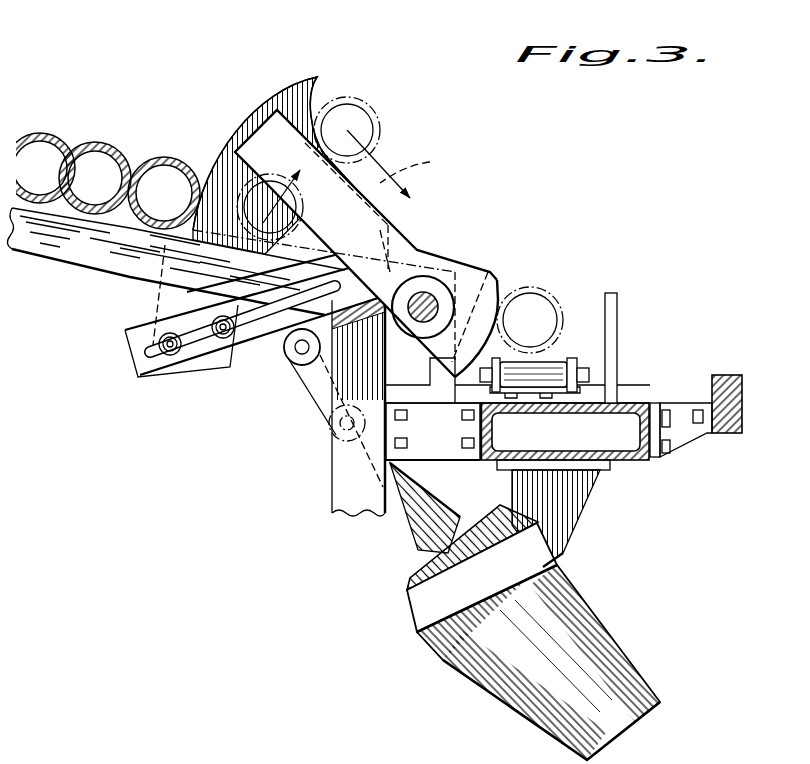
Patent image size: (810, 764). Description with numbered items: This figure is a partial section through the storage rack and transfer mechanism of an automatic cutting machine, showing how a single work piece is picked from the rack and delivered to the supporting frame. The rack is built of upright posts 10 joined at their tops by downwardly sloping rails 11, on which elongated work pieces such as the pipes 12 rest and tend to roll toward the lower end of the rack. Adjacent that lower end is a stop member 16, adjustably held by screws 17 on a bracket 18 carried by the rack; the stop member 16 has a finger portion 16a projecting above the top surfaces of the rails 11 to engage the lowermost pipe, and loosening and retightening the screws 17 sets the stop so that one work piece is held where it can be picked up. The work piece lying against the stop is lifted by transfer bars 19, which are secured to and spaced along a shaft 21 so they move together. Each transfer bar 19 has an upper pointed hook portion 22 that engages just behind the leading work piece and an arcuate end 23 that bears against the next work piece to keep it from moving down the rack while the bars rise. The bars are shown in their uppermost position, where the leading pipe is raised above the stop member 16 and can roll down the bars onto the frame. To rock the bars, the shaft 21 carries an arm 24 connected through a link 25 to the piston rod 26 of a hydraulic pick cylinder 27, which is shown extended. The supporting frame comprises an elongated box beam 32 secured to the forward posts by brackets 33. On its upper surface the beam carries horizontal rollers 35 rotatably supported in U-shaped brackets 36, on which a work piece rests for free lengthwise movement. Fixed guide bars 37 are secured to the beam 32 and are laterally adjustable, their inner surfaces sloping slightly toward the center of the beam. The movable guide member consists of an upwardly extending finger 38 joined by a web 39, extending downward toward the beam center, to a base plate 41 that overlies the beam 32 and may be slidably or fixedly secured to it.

The upright post 10 is at (342, 492).
The downwardly sloping rail 11 is at (50, 256).
The pipe 12 is at (150, 160).
The stop member 16 is at (267, 333).
The finger portion 16a is at (320, 229).
The screw 17 is at (183, 362).
The bracket 18 is at (222, 352).
The transfer bar 19 is at (180, 230).
The shaft 21 is at (424, 293).
The hook portion 22 is at (317, 78).
The arcuate end 23 is at (240, 147).
The arm 24 is at (322, 363).
The link 25 is at (318, 395).
The piston rod 26 is at (418, 518).
The hydraulic pick cylinder 27 is at (498, 693).
The box beam 32 is at (630, 462).
The bracket 33 is at (432, 455).
The horizontal roller 35 is at (538, 383).
The U-shaped bracket 36 is at (590, 388).
The fixed guide bar 37 is at (500, 283).
The finger 38 is at (614, 310).
The web 39 is at (568, 325).
The base plate 41 is at (597, 396).